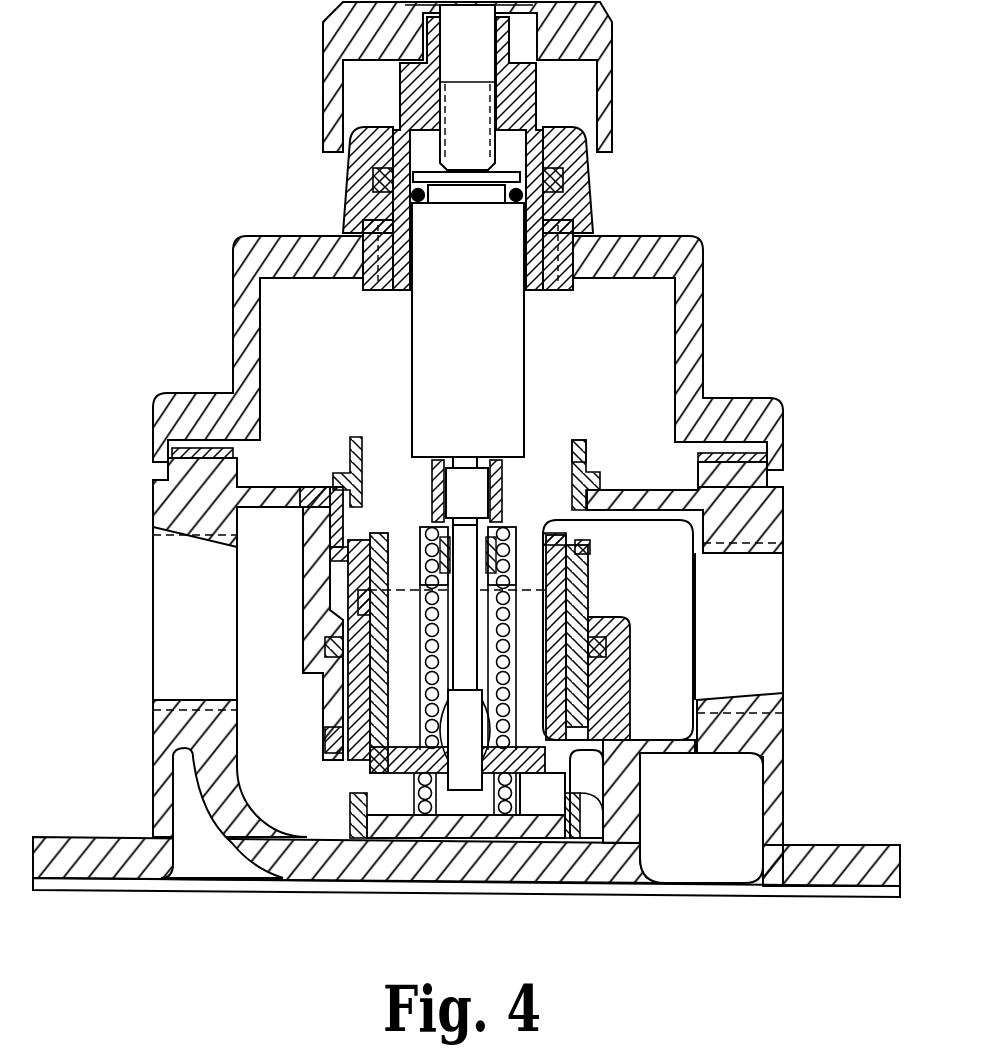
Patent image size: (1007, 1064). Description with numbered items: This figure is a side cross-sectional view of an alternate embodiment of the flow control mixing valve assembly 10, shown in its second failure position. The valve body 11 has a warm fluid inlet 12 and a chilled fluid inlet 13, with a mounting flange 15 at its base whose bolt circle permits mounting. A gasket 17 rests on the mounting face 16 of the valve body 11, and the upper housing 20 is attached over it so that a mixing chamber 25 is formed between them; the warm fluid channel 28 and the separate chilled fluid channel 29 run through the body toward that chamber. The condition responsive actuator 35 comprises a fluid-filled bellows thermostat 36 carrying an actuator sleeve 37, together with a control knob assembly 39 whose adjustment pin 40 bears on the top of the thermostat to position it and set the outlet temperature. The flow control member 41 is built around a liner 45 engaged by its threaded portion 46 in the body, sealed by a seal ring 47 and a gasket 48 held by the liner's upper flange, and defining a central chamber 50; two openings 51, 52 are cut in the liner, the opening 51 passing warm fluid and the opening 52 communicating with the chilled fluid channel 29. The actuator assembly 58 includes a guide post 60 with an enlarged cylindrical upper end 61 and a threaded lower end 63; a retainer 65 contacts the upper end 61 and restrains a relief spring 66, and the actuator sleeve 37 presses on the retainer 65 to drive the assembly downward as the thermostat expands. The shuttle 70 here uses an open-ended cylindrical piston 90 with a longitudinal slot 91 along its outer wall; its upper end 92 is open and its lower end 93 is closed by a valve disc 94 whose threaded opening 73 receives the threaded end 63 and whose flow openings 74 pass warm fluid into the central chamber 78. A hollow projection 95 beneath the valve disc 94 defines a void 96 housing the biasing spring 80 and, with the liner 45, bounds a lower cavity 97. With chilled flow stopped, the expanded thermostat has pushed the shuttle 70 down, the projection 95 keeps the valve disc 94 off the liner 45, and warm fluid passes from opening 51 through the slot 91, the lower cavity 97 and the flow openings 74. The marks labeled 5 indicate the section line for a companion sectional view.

The flow control mixing valve assembly 10 is at (805, 297).
The valve body 11 is at (777, 511).
The warm fluid inlet 12 is at (185, 546).
The chilled fluid inlet 13 is at (735, 546).
The mounting flange 15 is at (835, 856).
The mounting face 16 is at (770, 452).
The gasket 17 is at (735, 452).
The upper housing 20 is at (692, 248).
The mixing chamber 25 is at (574, 360).
The warm fluid channel 28 is at (256, 683).
The chilled fluid channel 29 is at (656, 635).
The condition responsive actuator 35 is at (520, 249).
The bellows thermostat 36 is at (425, 336).
The actuator sleeve 37 is at (497, 480).
The control knob assembly 39 is at (614, 94).
The adjustment pin 40 is at (478, 143).
The flow control member 41 is at (581, 447).
The liner 45 is at (358, 604).
The threaded portion 46 is at (340, 740).
The seal ring 47 is at (325, 646).
The gasket 48 is at (350, 480).
The central chamber 50 is at (374, 502).
The warm fluid opening 51 is at (350, 795).
The chilled fluid opening 52 is at (330, 552).
The section line 5 is at (465, 653).
The actuator assembly 58 is at (431, 493).
The guide post 60 is at (440, 462).
The enlarged cylindrical upper end 61 is at (490, 470).
The threaded lower end 63 is at (482, 690).
The retainer 65 is at (500, 522).
The relief spring 66 is at (500, 582).
The shuttle 70 is at (360, 682).
The threaded opening 73 is at (432, 690).
The flow openings 74 is at (428, 732).
The central chamber 78 is at (511, 630).
The biasing spring 80 is at (380, 838).
The piston 90 is at (392, 560).
The longitudinal slot 91 is at (592, 727).
The upper end 92 is at (568, 538).
The lower end 93 is at (548, 792).
The valve disc 94 is at (385, 770).
The projection 95 is at (520, 800).
The void 96 is at (460, 800).
The lower cavity 97 is at (528, 814).